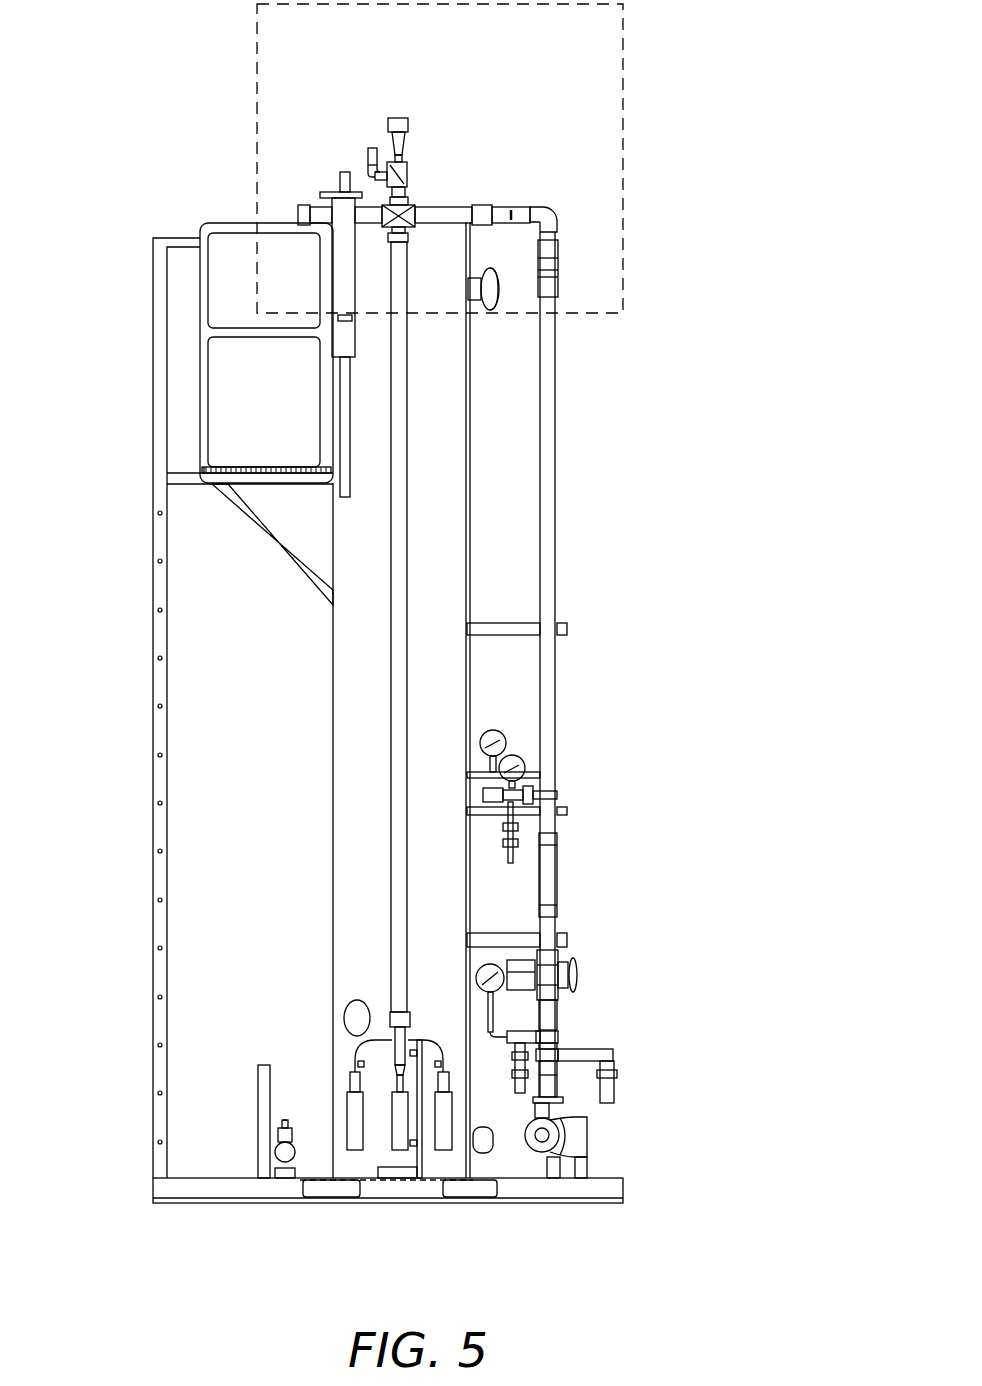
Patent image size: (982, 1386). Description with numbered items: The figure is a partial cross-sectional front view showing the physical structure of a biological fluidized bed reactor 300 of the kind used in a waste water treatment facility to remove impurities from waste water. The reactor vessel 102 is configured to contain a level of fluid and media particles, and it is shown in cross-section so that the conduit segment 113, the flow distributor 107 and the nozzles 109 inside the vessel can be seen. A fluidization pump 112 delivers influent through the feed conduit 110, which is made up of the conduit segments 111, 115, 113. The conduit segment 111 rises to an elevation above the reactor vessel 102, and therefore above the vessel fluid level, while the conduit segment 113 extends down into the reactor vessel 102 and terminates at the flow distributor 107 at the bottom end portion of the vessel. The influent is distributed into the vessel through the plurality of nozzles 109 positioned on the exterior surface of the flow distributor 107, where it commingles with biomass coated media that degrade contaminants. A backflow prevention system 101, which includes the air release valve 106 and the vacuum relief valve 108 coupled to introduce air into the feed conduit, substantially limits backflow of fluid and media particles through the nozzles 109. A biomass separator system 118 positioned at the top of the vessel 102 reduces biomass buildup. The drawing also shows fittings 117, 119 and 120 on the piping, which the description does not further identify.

The fluidized bed reactor 300 is at (182, 89).
The backflow prevention system 101 is at (623, 145).
The reactor vessel 102 is at (468, 507).
The air release valve 106 is at (403, 118).
The flow distributor 107 is at (433, 1040).
The vacuum relief valve 108 is at (367, 157).
The nozzles 109 is at (397, 1152).
The feed conduit 110 is at (555, 425).
The conduit segment 111 is at (440, 205).
The fluidization pump 112 is at (533, 1147).
The conduit segment 113 is at (407, 542).
The conduit segment 115 is at (555, 1073).
The control valve 117 is at (577, 963).
The biomass separator system 118 is at (354, 323).
The valve 119 is at (410, 173).
The port flange 120 is at (491, 310).